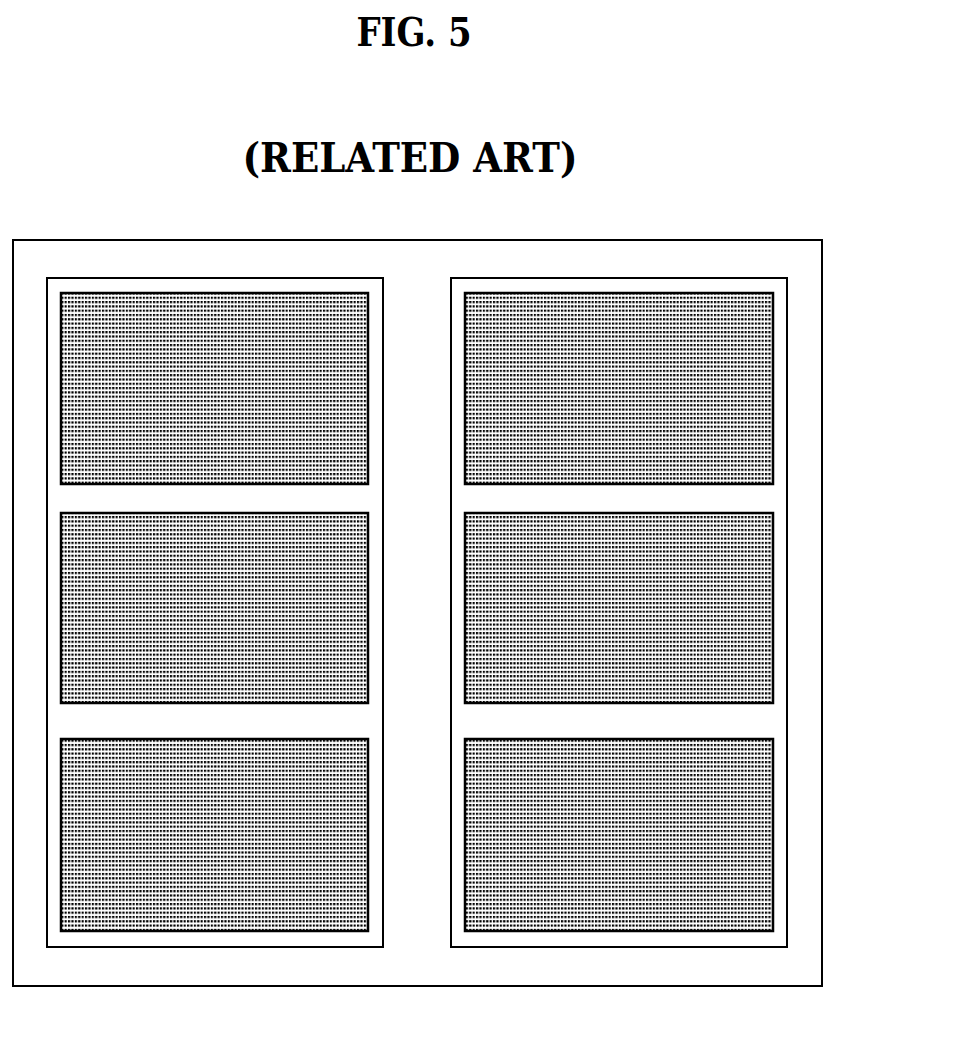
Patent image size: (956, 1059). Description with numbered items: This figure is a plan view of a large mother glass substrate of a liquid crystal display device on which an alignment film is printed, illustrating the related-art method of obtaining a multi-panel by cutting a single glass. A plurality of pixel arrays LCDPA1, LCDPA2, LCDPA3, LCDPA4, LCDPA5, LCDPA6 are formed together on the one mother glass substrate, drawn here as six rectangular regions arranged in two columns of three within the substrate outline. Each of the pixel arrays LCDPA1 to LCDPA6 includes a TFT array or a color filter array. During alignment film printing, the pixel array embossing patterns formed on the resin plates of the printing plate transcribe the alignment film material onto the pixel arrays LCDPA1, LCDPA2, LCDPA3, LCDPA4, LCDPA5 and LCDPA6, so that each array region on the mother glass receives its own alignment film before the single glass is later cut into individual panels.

The pixel array LCDPA1 is at (258, 403).
The pixel array LCDPA2 is at (660, 403).
The pixel array LCDPA3 is at (258, 625).
The pixel array LCDPA4 is at (660, 625).
The pixel array LCDPA5 is at (258, 851).
The pixel array LCDPA6 is at (660, 851).